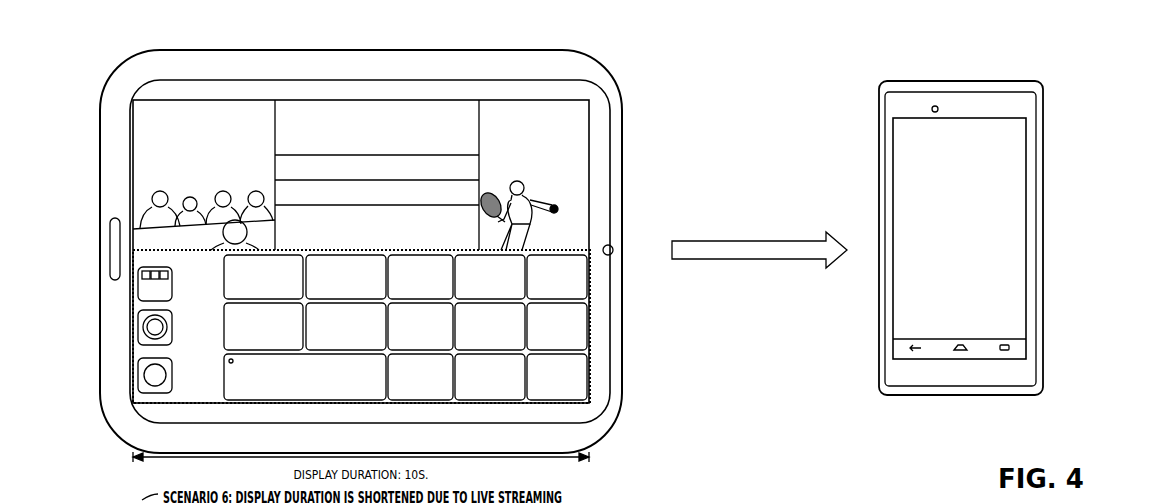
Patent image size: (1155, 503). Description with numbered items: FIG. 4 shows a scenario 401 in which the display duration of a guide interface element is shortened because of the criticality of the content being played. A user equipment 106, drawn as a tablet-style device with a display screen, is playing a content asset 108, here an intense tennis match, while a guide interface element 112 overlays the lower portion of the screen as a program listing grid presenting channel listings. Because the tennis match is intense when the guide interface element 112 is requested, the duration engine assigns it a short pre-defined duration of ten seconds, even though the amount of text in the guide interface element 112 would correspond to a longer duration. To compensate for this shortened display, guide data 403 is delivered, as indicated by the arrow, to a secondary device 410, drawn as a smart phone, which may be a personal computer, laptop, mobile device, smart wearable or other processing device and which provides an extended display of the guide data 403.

The scenario 401 is at (158, 32).
The content asset 108 is at (100, 135).
The user equipment 106 is at (113, 312).
The guide interface element 112 is at (578, 337).
The guide data 403 is at (716, 224).
The secondary device 410 is at (1016, 207).